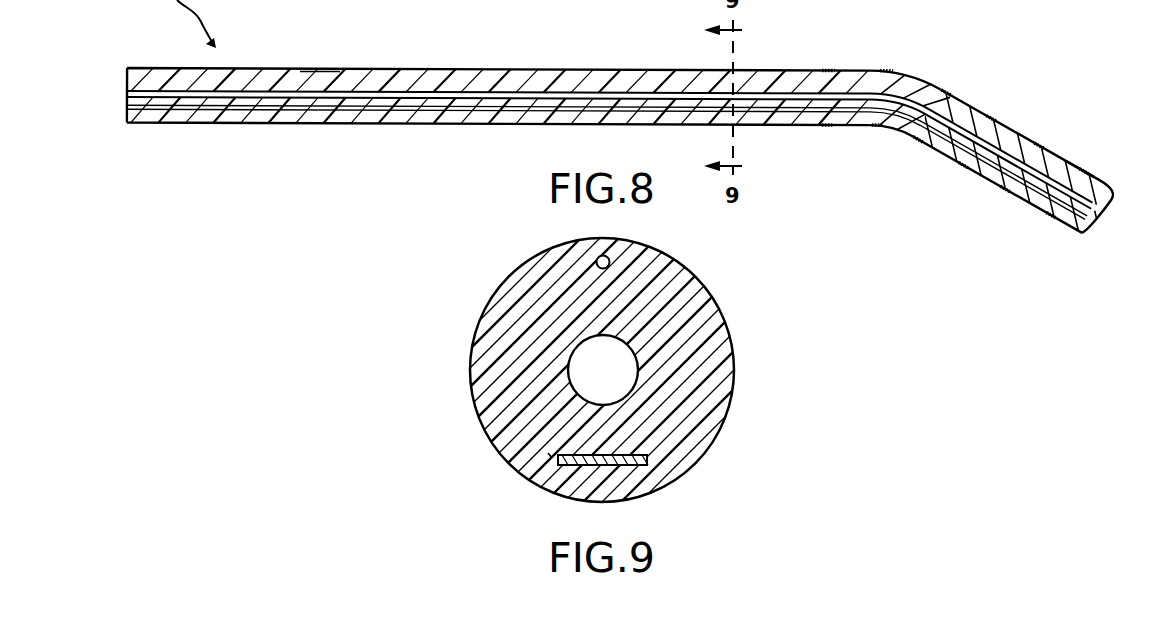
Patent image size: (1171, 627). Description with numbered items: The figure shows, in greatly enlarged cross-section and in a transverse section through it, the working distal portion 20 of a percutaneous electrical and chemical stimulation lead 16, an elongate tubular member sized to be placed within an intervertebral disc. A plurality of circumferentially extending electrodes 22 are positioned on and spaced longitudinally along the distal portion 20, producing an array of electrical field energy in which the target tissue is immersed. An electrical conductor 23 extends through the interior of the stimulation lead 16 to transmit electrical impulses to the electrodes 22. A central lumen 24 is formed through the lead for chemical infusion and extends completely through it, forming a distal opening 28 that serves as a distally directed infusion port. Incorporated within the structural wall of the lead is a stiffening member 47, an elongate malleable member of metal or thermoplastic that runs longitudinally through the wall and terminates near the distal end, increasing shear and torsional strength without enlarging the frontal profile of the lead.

In FIG. 8, the stimulation lead 16 is at (517, 68).
In FIG. 9, the stimulation lead 16 is at (709, 292).
In FIG. 8, the working distal portion 20 is at (1046, 116).
In FIG. 8, the electrodes 22 is at (877, 125).
In FIG. 8, the electrical conductor 23 is at (317, 71).
In FIG. 9, the electrical conductor 23 is at (610, 262).
In FIG. 8, the central lumen 24 is at (210, 95).
In FIG. 9, the central lumen 24 is at (625, 368).
In FIG. 8, the distal opening 28 is at (1095, 226).
In FIG. 8, the stiffening member 47 is at (427, 110).
In FIG. 9, the stiffening member 47 is at (632, 462).